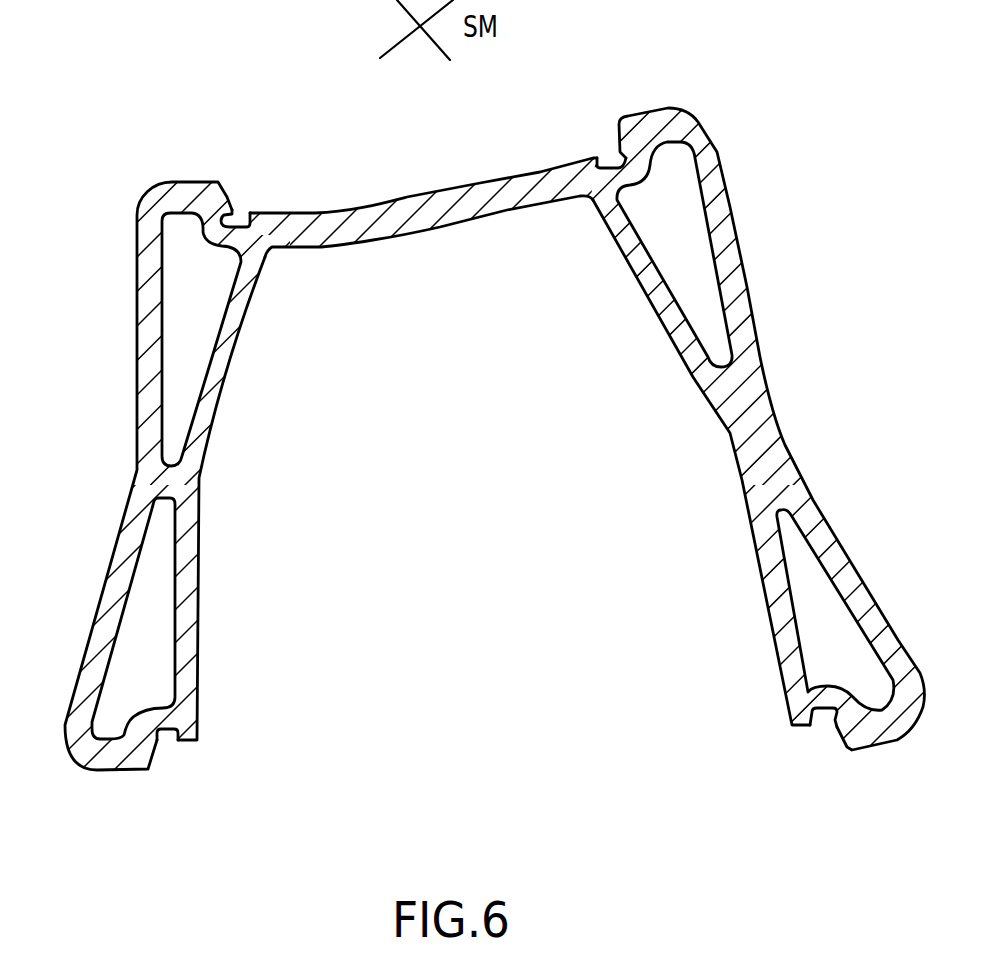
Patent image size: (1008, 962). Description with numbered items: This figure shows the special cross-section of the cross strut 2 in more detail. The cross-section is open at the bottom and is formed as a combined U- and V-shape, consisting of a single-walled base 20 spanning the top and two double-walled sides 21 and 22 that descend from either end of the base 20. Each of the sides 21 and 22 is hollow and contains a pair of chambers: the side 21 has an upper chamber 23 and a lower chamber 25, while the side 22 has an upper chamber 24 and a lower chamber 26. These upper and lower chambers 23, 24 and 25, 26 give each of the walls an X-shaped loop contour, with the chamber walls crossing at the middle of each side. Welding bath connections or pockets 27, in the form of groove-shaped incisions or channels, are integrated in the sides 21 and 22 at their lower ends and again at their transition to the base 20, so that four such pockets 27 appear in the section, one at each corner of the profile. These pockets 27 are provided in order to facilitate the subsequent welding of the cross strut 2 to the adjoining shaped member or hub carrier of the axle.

The cross strut 2 is at (504, 424).
The base 20 is at (405, 212).
The side 21 is at (157, 477).
The side 22 is at (752, 423).
The upper chamber 23 is at (205, 318).
The upper chamber 24 is at (677, 258).
The lower chamber 25 is at (158, 618).
The lower chamber 26 is at (813, 603).
The welding bath connections or pockets 27 is at (173, 803).